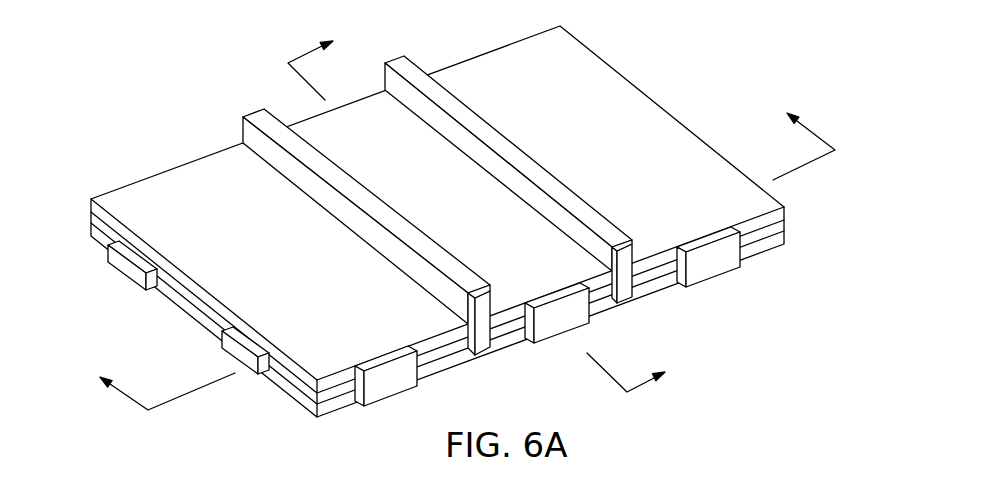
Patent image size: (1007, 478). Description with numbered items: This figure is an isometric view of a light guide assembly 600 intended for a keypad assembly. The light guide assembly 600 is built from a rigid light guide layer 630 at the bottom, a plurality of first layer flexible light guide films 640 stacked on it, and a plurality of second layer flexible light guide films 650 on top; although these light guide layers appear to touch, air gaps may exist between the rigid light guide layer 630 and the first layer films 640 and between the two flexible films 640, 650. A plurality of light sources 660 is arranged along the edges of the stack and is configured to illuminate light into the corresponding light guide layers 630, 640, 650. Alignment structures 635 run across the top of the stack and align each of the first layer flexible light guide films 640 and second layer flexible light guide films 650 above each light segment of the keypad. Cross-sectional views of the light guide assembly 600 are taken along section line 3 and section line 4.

The light guide assembly 600 is at (414, 208).
The second layer flexible light guide films 650 is at (133, 195).
The first layer flexible light guide films 640 is at (91, 214).
The rigid light guide layer 630 is at (103, 237).
The alignment structures 635 is at (372, 235).
The light sources 660 is at (403, 394).
The section line 3- 3 is at (460, 253).
The section line 4- 4 is at (485, 207).